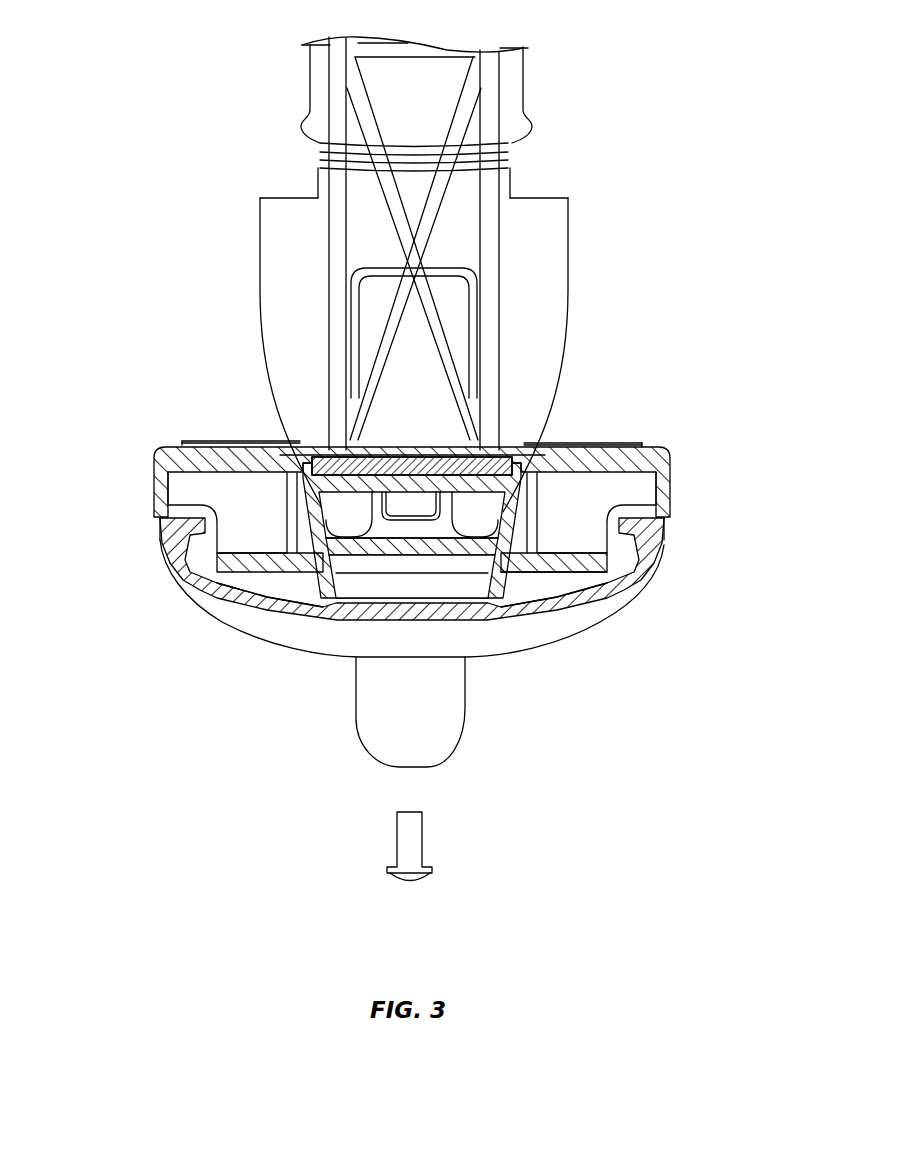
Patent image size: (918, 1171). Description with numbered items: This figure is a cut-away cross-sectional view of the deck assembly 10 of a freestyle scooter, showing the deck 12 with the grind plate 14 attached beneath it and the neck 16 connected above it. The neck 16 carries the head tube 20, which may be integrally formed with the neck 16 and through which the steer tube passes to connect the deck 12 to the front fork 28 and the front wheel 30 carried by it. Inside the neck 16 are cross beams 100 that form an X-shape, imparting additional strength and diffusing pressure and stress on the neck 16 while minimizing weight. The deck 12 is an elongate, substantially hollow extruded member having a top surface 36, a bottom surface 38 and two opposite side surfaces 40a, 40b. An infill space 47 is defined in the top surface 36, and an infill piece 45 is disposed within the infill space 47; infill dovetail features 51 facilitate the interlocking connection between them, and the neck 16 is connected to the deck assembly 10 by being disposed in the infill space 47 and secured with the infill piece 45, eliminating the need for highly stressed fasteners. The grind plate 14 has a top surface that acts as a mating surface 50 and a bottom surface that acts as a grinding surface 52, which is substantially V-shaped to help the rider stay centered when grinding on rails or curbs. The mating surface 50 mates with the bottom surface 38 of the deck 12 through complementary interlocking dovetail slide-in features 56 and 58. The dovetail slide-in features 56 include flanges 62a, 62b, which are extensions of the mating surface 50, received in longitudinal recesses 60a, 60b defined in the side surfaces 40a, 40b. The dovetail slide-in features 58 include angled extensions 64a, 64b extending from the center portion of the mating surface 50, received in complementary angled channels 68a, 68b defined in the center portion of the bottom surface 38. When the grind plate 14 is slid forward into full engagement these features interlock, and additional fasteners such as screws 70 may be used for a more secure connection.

The deck assembly 10 is at (113, 440).
The deck 12 is at (657, 445).
The grind plate 14 is at (600, 590).
The neck 16 is at (492, 188).
The head tube 20 is at (512, 75).
The front fork 28 is at (565, 222).
The front wheel 30 is at (398, 768).
The top surface 36 is at (580, 442).
The bottom surface 38 is at (383, 556).
The side surface 40a is at (667, 502).
The side surface 40b is at (155, 505).
The infill piece 45 is at (446, 460).
The infill space 47 is at (385, 466).
The mating surface 50 is at (533, 593).
The infill dovetail features 51 is at (313, 456).
The grinding surface 52 is at (478, 592).
The dovetail slide-in features 56 is at (142, 520).
The dovetail slide-in features 58 is at (352, 572).
The longitudinal recess 60a is at (603, 517).
The longitudinal recess 60b is at (212, 518).
The flange 62a is at (653, 575).
The flange 62b is at (177, 573).
The angled extension 64a is at (490, 603).
The angled extension 64b is at (320, 565).
The angled channel 68a is at (520, 452).
The angled channel 68b is at (295, 450).
The screw 70 is at (422, 838).
The cross beam 100 is at (372, 135).